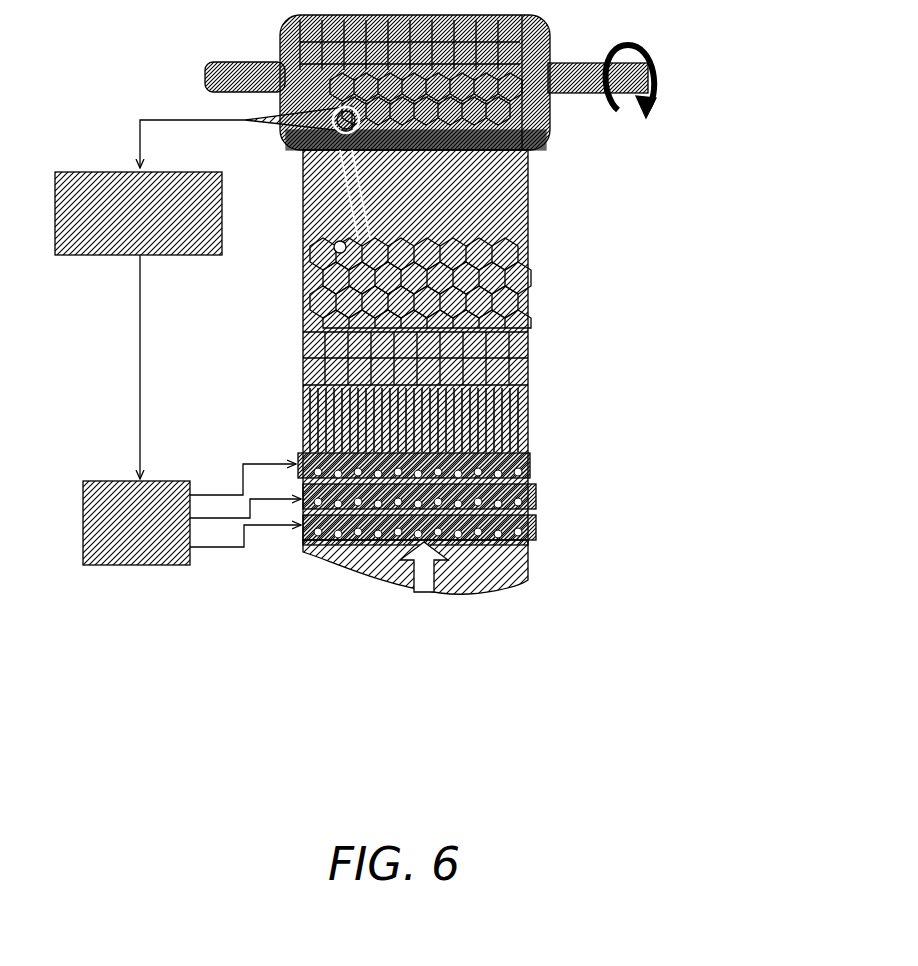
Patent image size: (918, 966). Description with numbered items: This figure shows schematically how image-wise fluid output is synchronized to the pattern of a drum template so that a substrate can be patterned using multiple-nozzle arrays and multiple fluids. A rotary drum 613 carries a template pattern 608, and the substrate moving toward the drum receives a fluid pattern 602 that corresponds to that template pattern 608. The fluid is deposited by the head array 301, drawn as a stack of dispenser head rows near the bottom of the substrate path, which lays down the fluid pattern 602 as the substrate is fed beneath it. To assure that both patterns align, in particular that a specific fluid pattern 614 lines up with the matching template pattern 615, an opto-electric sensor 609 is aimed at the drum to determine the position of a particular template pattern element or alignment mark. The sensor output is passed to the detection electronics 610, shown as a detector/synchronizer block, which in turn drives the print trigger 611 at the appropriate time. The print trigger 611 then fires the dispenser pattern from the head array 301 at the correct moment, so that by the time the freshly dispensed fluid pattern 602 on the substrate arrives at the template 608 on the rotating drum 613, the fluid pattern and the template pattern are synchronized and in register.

The head array 301 is at (538, 463).
The fluid pattern 602 is at (522, 284).
The template pattern 608 is at (530, 152).
The opto-electric sensor 609 is at (252, 113).
The detection electronics 610 is at (184, 258).
The print trigger 611 is at (162, 481).
The rotary drum 613 is at (560, 114).
The fluid pattern 614 is at (332, 246).
The template pattern 615 is at (310, 150).